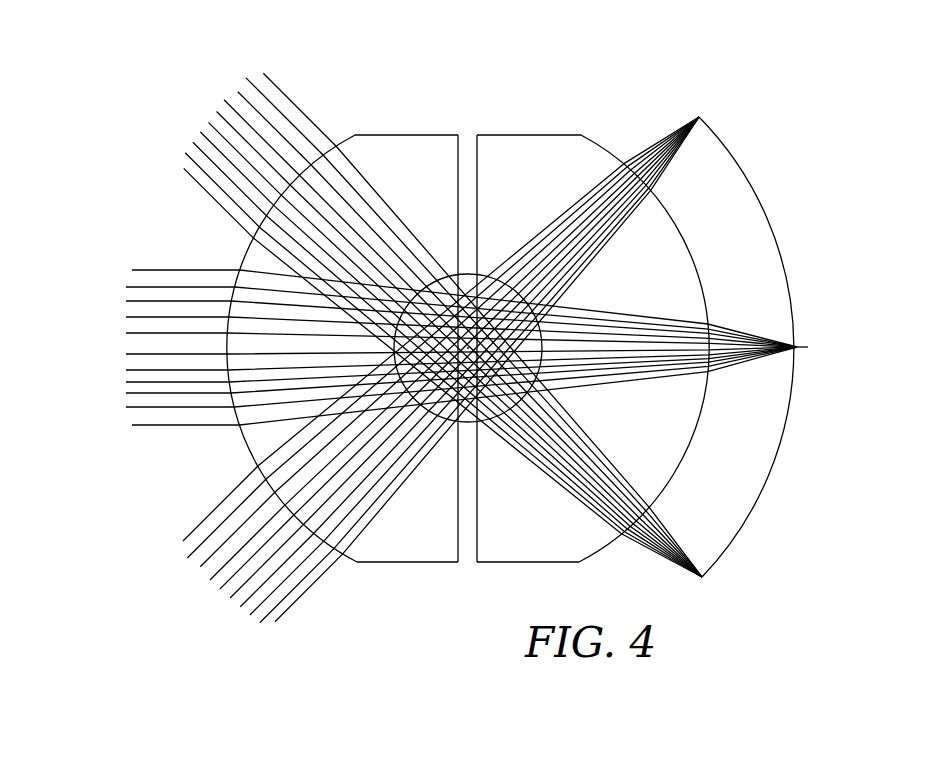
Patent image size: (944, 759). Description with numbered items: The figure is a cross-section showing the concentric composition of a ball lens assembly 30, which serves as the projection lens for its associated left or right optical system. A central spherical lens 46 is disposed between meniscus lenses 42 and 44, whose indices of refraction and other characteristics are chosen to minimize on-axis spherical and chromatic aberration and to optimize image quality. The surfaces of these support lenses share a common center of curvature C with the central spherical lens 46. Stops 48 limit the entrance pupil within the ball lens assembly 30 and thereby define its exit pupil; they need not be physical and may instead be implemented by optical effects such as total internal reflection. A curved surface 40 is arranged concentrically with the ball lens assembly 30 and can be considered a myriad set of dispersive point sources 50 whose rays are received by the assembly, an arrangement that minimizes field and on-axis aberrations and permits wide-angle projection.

The ball lens assembly 30 is at (468, 368).
The curved surface 40 is at (769, 478).
The meniscus lens 42 is at (522, 153).
The meniscus lens 44 is at (387, 147).
The central spherical lens 46 is at (448, 421).
The stops 48 is at (466, 286).
The dispersive point sources 50 is at (698, 118).
The common center of curvature C is at (492, 276).